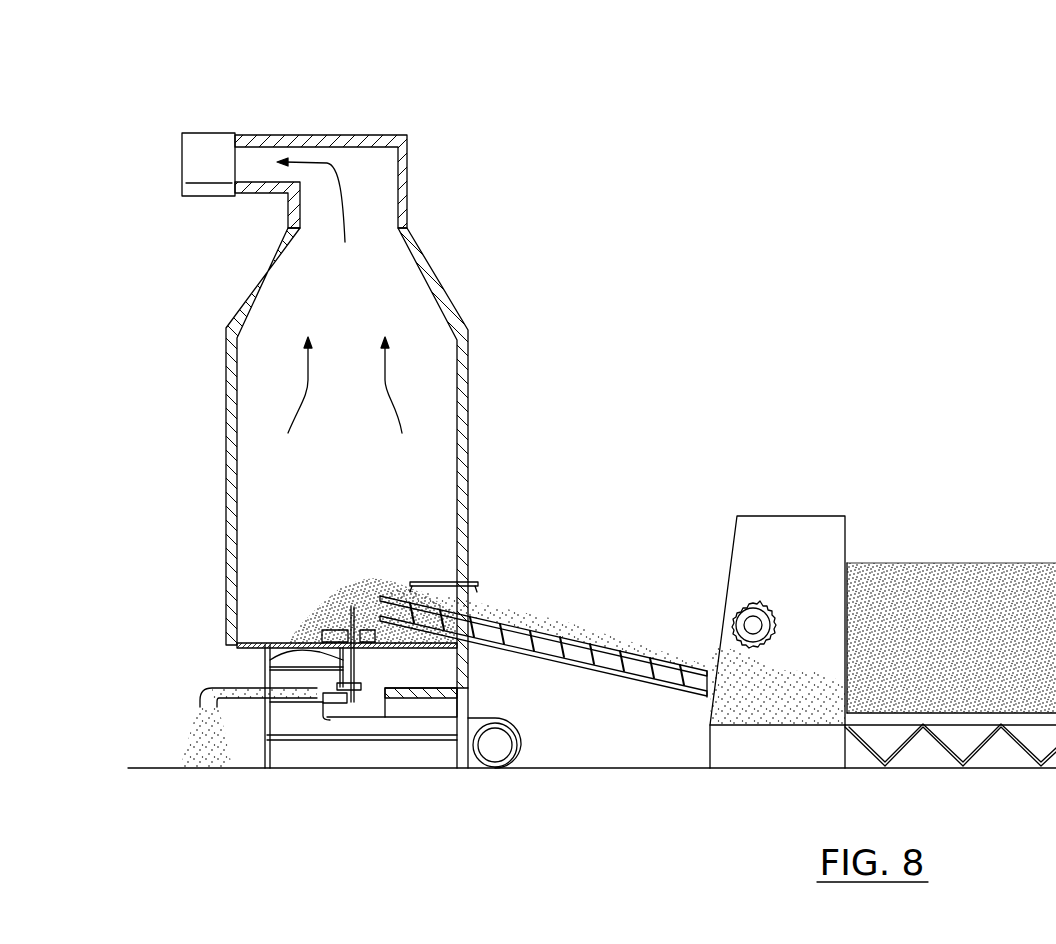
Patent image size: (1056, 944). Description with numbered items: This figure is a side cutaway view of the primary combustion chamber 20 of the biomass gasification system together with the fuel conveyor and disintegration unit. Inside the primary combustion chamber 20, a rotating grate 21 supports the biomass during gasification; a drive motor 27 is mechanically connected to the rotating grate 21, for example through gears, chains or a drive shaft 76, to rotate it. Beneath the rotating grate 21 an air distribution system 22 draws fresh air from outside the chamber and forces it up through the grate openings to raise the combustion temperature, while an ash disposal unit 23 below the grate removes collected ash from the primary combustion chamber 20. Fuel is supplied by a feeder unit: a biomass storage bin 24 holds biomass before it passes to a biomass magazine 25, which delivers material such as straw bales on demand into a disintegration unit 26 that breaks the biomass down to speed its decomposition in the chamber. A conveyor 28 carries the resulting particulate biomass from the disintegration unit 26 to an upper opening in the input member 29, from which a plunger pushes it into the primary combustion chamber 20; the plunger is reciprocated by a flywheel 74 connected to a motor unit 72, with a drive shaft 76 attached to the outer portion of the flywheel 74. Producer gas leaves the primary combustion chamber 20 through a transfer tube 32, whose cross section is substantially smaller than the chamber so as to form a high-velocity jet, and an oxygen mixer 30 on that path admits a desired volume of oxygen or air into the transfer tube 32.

The primary combustion chamber 20 is at (467, 427).
The rotating grate 21 is at (270, 643).
The air distribution system 22 is at (500, 750).
The ash disposal unit 23 is at (203, 687).
The biomass storage bin 24 is at (965, 563).
The biomass magazine 25 is at (930, 760).
The disintegration unit 26 is at (782, 538).
The drive motor 27 is at (320, 655).
The conveyor 28 is at (600, 672).
The input member 29 is at (290, 630).
The oxygen mixer 30 is at (208, 164).
The transfer tube 32 is at (290, 138).
The motor unit 72 is at (338, 703).
The flywheel 74 is at (377, 648).
The drive shaft 76 is at (367, 648).